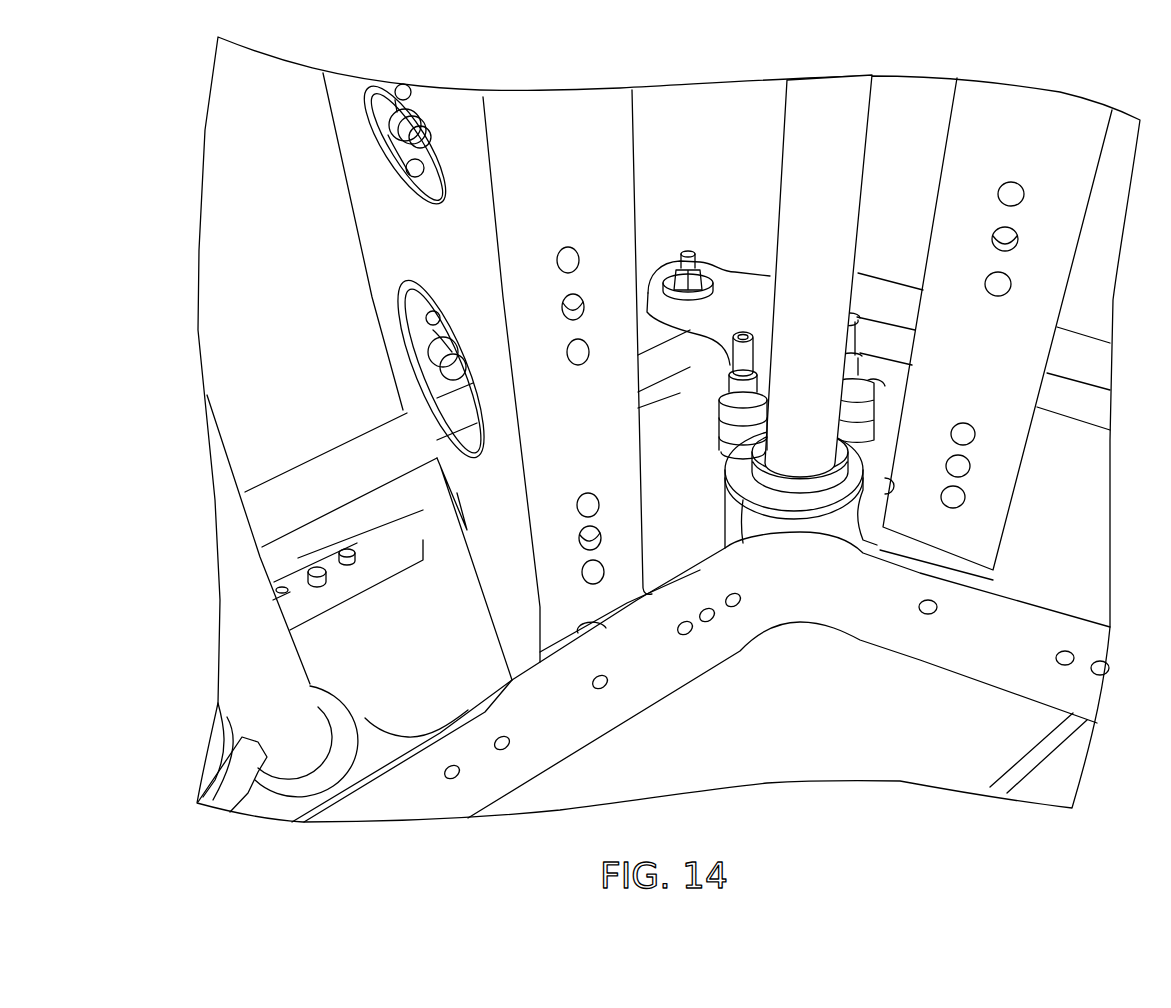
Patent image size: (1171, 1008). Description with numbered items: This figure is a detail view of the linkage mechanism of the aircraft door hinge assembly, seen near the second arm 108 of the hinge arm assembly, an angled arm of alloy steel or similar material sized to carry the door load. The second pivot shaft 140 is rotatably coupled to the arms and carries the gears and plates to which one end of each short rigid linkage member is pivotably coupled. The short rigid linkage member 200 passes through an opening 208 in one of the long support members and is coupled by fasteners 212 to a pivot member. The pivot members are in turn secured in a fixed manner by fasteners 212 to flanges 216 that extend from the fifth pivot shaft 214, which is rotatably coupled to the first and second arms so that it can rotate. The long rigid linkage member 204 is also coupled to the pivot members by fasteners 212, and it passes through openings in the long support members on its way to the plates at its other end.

The second arm 108 is at (672, 678).
The second pivot shaft 140 is at (225, 457).
The short rigid linkage member 200 is at (343, 462).
The long rigid linkage member 204 is at (1070, 407).
The opening 208 is at (462, 525).
The fastener 212 is at (688, 253).
The fifth pivot shaft 214 is at (845, 202).
The flange 216 is at (730, 420).